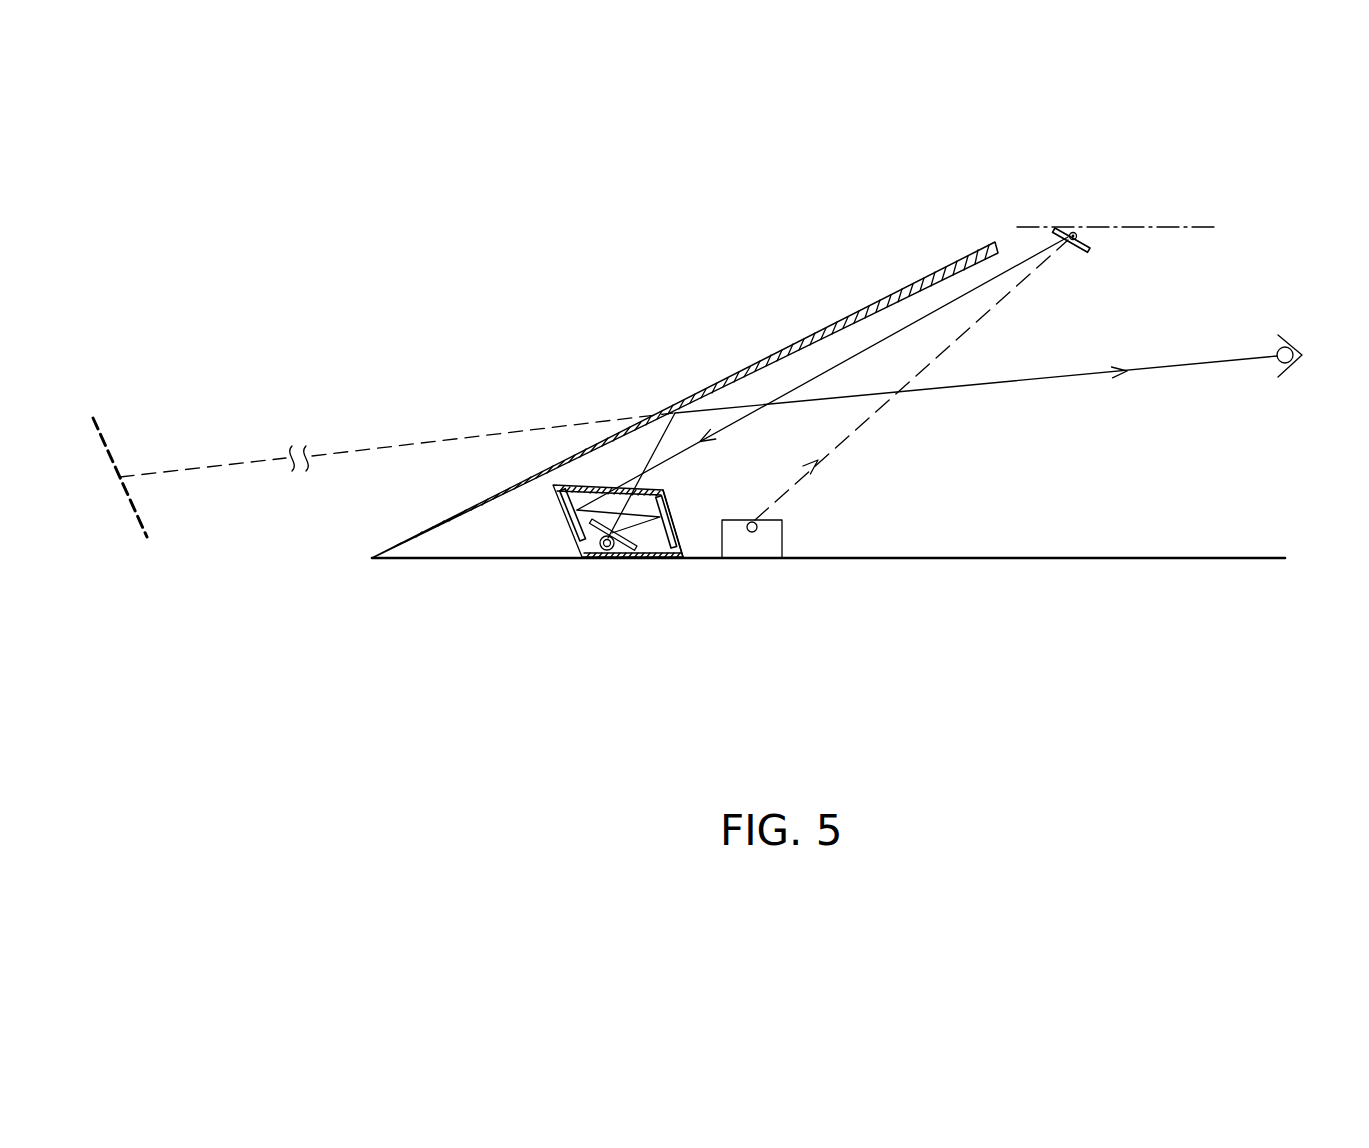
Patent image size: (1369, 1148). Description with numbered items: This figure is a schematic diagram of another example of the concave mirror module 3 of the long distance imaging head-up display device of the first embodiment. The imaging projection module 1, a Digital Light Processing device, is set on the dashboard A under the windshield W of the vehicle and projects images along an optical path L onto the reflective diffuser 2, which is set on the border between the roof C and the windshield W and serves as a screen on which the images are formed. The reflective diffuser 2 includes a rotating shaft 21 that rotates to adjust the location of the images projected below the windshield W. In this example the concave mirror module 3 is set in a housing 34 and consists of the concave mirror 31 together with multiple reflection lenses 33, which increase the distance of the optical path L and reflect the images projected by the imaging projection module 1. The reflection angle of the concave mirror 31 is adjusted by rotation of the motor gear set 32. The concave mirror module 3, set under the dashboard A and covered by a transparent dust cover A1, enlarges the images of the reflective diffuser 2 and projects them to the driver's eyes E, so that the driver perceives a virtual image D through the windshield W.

The imaging projection module 1 is at (783, 537).
The reflective diffuser 2 is at (1088, 238).
The rotating shaft 21 is at (1086, 229).
The concave mirror module 3 is at (617, 552).
The concave mirror 31 is at (616, 560).
The motor gear set 32 is at (598, 557).
The reflection lenses 33 is at (565, 531).
The housing 34 is at (683, 555).
The dashboard A is at (1053, 557).
The transparent dust cover A1 is at (560, 461).
The roof C is at (1155, 228).
The virtual image D is at (105, 441).
The drivers' eyes E is at (1297, 343).
The optical path L is at (857, 431).
The windshield W is at (757, 361).